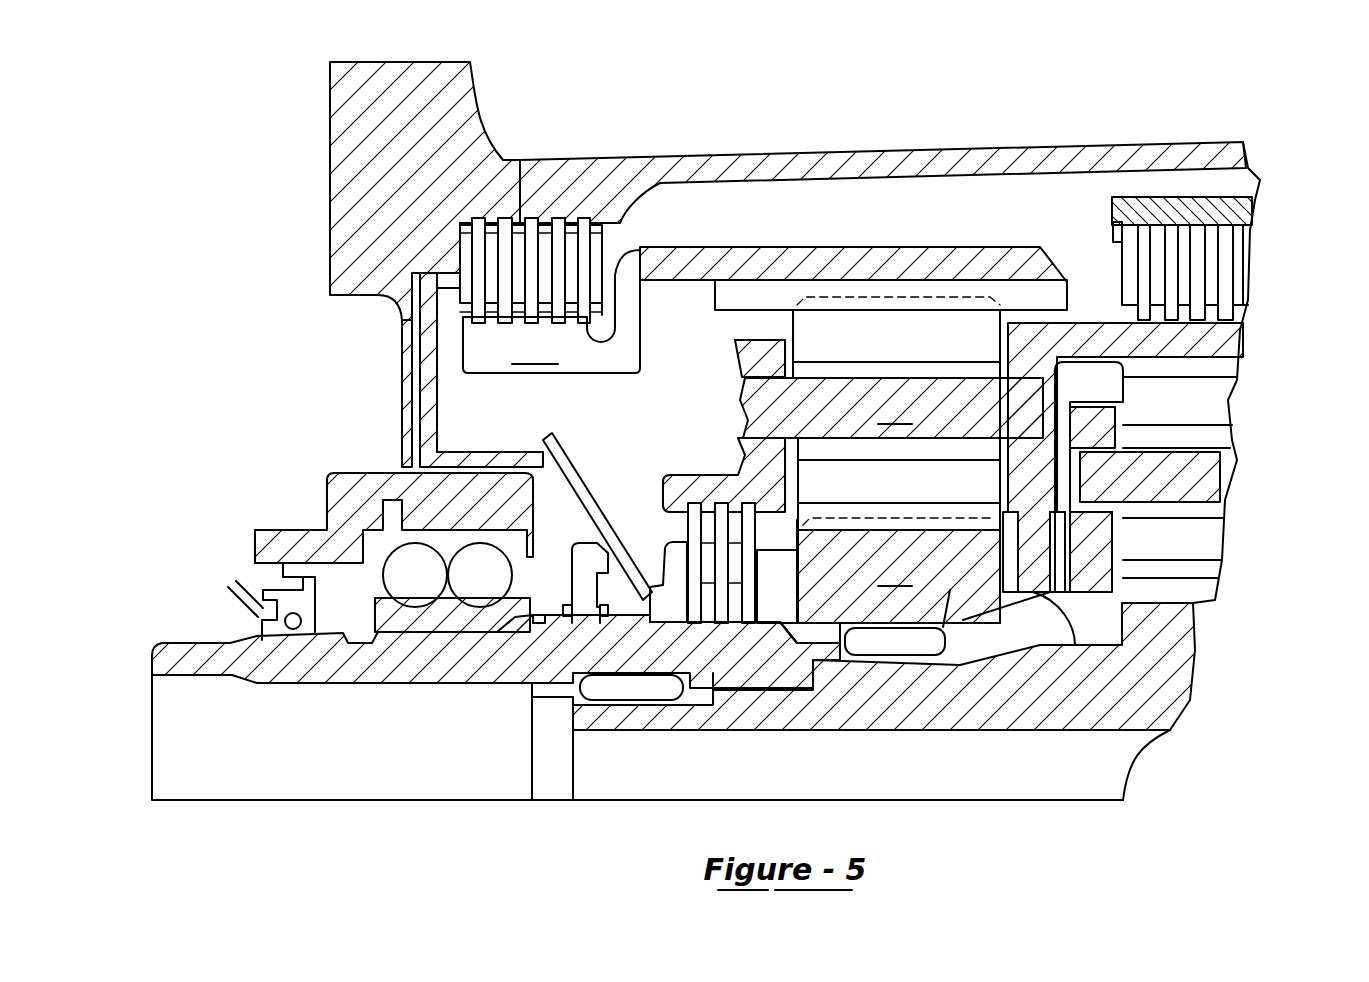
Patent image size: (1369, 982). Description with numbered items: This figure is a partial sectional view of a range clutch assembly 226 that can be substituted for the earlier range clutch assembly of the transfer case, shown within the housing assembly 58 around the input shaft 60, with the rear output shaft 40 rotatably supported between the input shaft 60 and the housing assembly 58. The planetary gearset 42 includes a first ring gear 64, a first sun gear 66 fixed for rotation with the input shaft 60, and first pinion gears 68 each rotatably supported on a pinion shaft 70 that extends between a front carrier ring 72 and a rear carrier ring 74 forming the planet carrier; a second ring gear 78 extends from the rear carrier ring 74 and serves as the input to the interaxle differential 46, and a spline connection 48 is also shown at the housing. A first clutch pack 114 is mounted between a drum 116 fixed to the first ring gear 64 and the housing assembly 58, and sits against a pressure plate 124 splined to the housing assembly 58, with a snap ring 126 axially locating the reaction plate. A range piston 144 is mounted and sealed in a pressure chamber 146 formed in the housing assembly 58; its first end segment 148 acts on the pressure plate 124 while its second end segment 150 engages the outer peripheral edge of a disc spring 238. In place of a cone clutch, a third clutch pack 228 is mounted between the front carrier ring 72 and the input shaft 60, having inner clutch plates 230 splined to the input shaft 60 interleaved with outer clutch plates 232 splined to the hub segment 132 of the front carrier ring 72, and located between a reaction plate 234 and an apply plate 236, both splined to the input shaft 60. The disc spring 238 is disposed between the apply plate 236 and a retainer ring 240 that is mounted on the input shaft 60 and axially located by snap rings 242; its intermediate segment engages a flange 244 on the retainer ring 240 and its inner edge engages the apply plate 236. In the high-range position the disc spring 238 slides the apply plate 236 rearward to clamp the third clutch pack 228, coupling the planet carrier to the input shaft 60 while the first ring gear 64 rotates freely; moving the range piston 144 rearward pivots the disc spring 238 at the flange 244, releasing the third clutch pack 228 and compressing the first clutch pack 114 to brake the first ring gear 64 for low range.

The rear output shaft 40 is at (977, 722).
The planetary gearset 42 is at (965, 205).
The interaxle differential 46 is at (1250, 472).
The spline connection 48 is at (1187, 187).
The housing assembly 58 is at (440, 55).
The input shaft 60 is at (207, 645).
The first ring gear 64 is at (865, 262).
The first sun gear 66 is at (899, 592).
The first pinion gears 68 is at (850, 325).
The pinion shaft 70 is at (891, 500).
The front carrier ring 72 is at (745, 350).
The rear carrier ring 74 is at (1045, 592).
The second ring gear 78 is at (1120, 340).
The first clutch pack 114 is at (532, 215).
The drum 116 is at (551, 311).
The pressure plate 124 is at (463, 250).
The snap ring 126 is at (600, 272).
The hub segment 132 is at (715, 455).
The range piston 144 is at (402, 332).
The pressure chamber 146 is at (420, 347).
The first end segment 148 is at (437, 268).
The second end segment 150 is at (488, 452).
The range clutch assembly 226 is at (452, 392).
The third clutch pack 228 is at (700, 648).
The inner clutch plates 230 is at (730, 626).
The outer clutch plates 232 is at (778, 508).
The reaction plate 234 is at (782, 620).
The apply plate 236 is at (668, 612).
The disc spring 238 is at (556, 466).
The retainer ring 240 is at (507, 618).
The snap rings 242 is at (546, 702).
The flange 244 is at (560, 505).